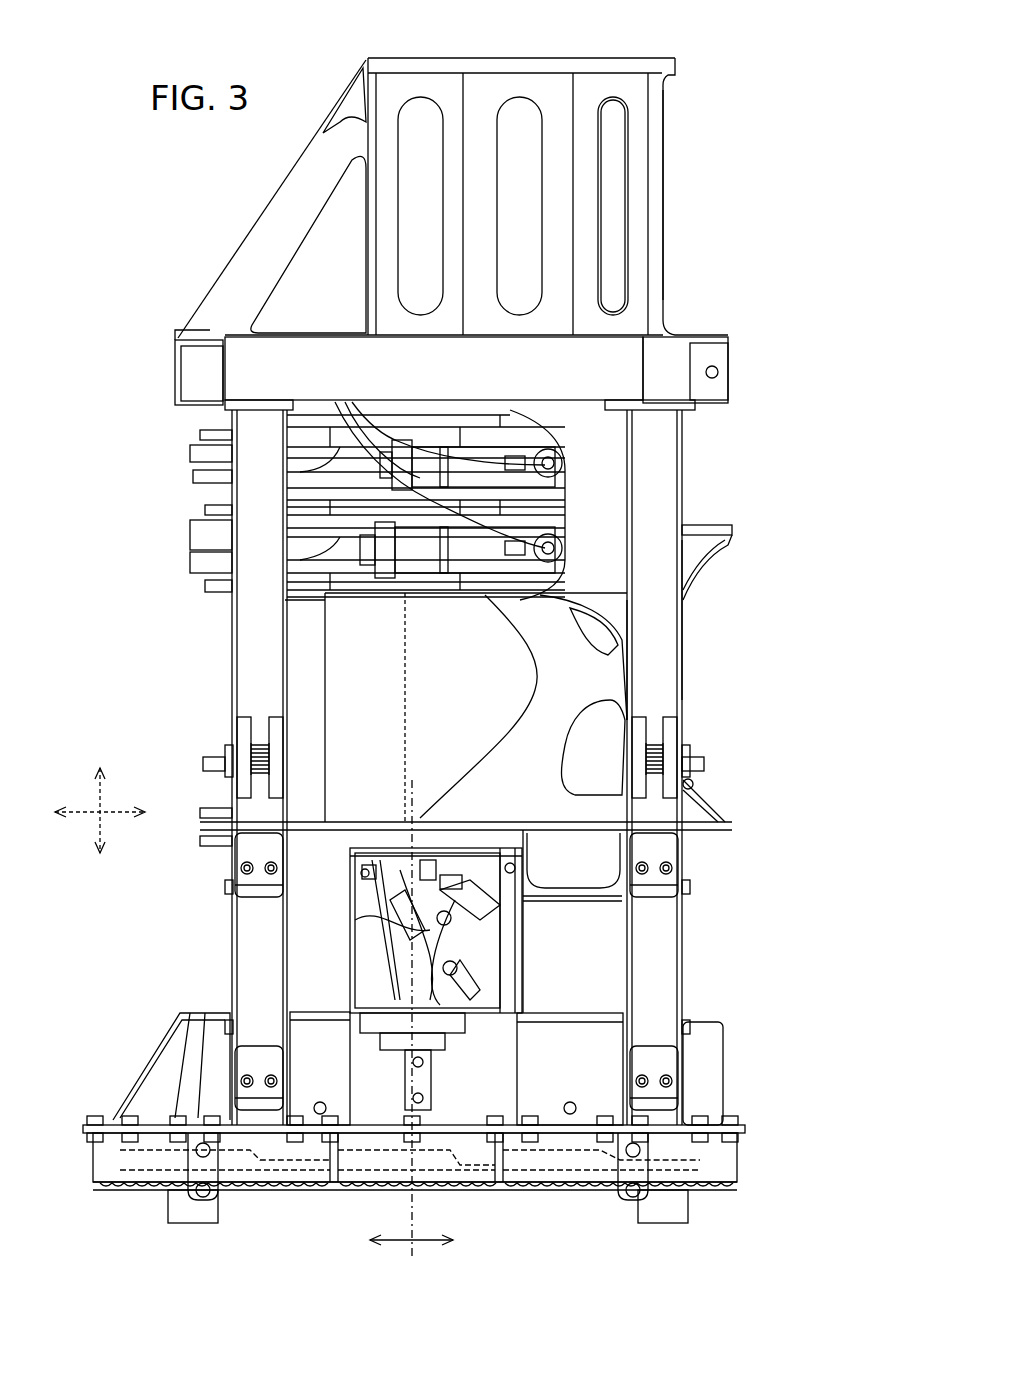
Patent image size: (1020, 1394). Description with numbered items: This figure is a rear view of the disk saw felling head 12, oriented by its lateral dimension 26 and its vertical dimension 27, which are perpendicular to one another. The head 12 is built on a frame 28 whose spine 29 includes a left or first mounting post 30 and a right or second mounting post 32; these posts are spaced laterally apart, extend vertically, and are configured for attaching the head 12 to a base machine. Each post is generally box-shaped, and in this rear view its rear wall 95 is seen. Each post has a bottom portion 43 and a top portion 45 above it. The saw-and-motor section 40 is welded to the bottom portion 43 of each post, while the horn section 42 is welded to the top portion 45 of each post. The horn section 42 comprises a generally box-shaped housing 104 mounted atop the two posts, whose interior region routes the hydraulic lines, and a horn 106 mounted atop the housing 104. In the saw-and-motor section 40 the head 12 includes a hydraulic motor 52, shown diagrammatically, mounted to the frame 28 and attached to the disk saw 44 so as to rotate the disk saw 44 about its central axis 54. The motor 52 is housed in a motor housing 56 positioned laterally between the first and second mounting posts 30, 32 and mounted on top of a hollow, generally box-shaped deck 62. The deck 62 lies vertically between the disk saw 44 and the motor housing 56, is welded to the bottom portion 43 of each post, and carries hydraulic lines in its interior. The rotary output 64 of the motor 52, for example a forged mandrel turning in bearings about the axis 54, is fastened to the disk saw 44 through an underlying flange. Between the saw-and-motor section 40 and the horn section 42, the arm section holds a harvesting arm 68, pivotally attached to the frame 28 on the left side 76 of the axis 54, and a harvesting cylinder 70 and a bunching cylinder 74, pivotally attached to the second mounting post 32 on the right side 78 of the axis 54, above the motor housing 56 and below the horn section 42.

The head 12 is at (170, 205).
The horn section 42 is at (690, 212).
The horn 106 is at (665, 165).
The housing 104 is at (615, 375).
The top portion 45 is at (215, 400).
The rear wall 95 is at (240, 432).
The bunching cylinder 74 is at (330, 460).
The harvesting cylinder 70 is at (330, 548).
The first mounting post 30 is at (215, 640).
The second mounting post 32 is at (713, 585).
The spine 29 is at (713, 653).
The frame 28 is at (713, 735).
The harvesting arm 68 is at (545, 678).
The lateral dimension 26 is at (120, 810).
The vertical dimension 27 is at (120, 820).
The motor housing 56 is at (350, 920).
The saw-and-motor section 40 is at (175, 990).
The bottom portion 43 is at (230, 1063).
The hydraulic motor 52 is at (455, 960).
The rotary output 64 is at (430, 1030).
The deck 62 is at (500, 1052).
The disk saw 44 is at (245, 1185).
The central axis 54 is at (412, 1200).
The left direction 76 is at (390, 1238).
The second side 78 is at (430, 1240).